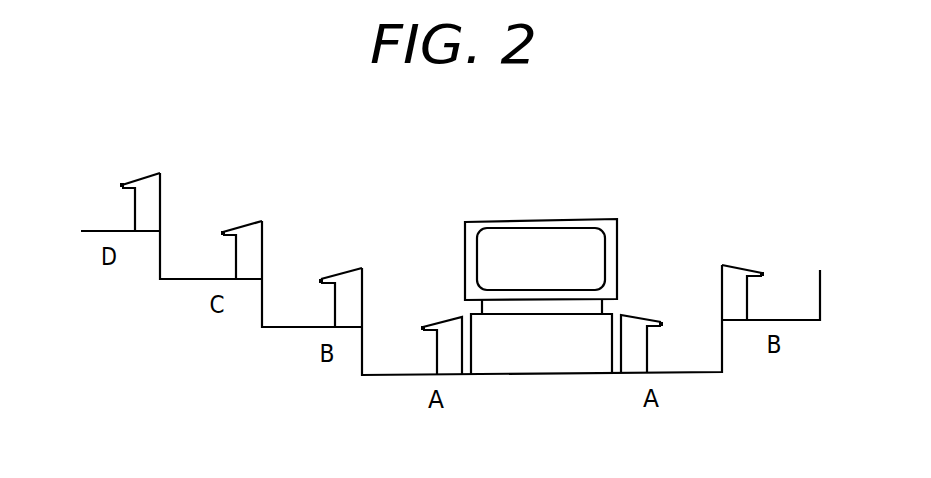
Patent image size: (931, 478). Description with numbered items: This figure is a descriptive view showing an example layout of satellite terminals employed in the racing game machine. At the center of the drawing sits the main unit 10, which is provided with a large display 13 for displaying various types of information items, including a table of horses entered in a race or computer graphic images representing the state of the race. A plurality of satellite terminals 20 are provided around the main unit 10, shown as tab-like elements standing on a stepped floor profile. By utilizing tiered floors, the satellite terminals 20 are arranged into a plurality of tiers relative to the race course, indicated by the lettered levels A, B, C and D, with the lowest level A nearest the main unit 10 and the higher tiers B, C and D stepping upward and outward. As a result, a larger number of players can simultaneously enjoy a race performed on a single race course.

The main unit 10 is at (503, 363).
The large display 13 is at (567, 219).
The satellite terminals 20 is at (442, 317).